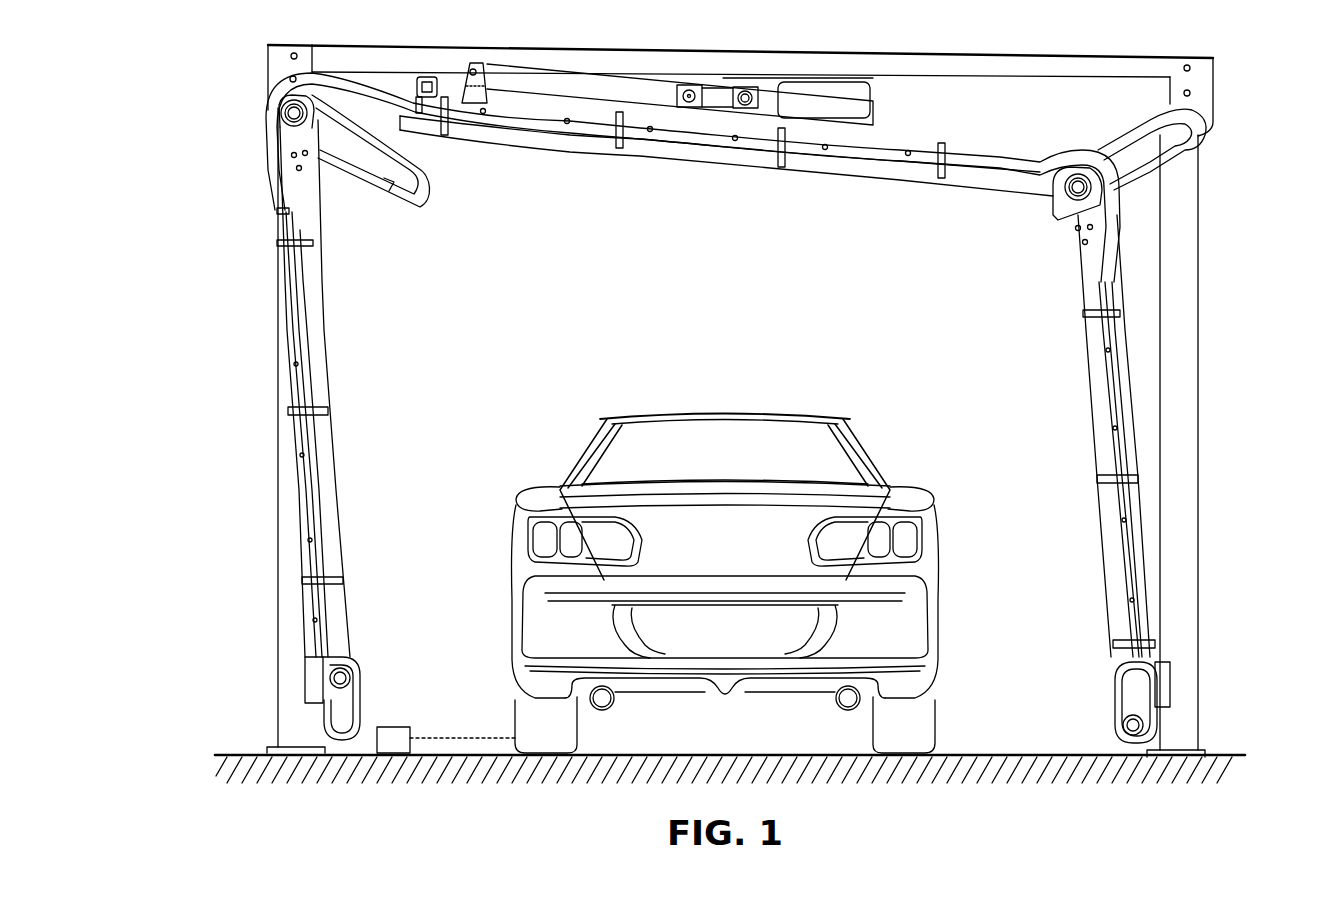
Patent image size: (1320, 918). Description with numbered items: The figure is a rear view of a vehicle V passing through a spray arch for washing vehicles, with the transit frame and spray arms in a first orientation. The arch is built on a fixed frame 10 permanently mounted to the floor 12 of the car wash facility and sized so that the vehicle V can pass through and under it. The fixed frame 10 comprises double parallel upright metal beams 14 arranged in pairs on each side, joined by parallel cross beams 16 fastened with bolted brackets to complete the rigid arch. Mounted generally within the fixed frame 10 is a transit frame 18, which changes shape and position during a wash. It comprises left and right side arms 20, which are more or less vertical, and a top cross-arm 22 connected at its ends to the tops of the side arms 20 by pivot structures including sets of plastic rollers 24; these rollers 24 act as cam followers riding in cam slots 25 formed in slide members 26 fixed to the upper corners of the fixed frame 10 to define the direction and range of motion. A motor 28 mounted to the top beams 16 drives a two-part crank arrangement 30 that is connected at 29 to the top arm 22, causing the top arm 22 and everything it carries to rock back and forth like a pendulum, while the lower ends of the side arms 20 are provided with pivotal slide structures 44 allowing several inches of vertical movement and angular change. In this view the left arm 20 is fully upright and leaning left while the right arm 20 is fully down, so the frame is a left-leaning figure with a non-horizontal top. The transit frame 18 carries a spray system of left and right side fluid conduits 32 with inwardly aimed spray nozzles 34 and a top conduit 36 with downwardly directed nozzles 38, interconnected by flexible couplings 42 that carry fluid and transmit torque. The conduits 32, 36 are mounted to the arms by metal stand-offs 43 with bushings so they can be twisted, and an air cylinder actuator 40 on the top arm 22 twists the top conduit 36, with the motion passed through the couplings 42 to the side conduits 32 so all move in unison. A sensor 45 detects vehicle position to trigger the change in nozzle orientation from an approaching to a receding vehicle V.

The fixed frame 10 is at (1208, 248).
The floor 12 is at (985, 753).
The upright metal beams 14 is at (278, 490).
The cross beams 16 is at (905, 51).
The transit frame 18 is at (1078, 290).
The side arms 20 is at (324, 330).
The top cross-arm 22 is at (735, 178).
The rollers 24 is at (281, 112).
The cam slots 25 is at (391, 184).
The slide members 26 is at (431, 186).
The motor 28 is at (875, 106).
The connection to top arm 29 is at (460, 78).
The two-part crank arrangement 30 is at (640, 83).
The side fluid conduits 32 is at (312, 503).
The spray nozzles 34 is at (305, 455).
The top conduit 36 is at (955, 148).
The nozzles 38 is at (650, 132).
The air cylinder actuator 40 is at (422, 76).
The flexible couplings 42 is at (350, 72).
The stand-offs 43 is at (280, 223).
The pivotal slide structures 44 is at (353, 688).
The sensor 45 is at (398, 726).
The vehicle V is at (785, 410).